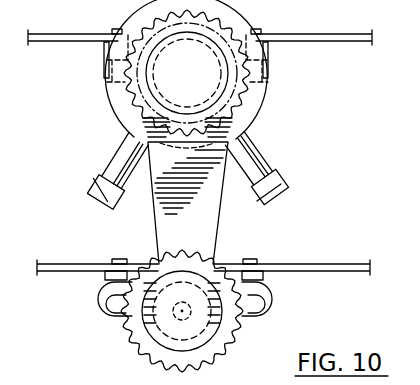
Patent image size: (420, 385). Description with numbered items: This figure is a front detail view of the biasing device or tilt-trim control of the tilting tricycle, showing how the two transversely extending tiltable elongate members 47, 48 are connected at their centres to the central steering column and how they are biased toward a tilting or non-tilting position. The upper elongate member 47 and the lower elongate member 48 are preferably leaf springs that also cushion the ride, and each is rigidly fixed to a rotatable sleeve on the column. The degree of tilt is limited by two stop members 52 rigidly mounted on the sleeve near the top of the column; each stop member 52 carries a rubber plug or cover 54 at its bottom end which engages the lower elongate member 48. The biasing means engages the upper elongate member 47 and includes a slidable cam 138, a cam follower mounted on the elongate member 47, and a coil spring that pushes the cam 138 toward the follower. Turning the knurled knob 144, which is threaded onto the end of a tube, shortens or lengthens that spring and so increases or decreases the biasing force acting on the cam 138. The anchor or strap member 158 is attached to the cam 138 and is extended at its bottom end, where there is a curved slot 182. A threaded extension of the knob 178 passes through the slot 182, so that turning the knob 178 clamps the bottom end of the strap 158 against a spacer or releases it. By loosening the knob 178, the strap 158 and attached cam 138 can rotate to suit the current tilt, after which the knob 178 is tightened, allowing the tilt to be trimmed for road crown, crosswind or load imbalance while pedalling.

The upper tiltable elongate member 47 is at (310, 42).
The lower tiltable elongate member 48 is at (309, 263).
The stop member 52 is at (120, 163).
The rubber plug or cover 54 is at (103, 190).
The slidable cam 138 is at (245, 111).
The knurled knob 144 is at (257, 93).
The strap 158 is at (170, 213).
The knob 178 is at (130, 336).
The curved slot 182 is at (270, 304).